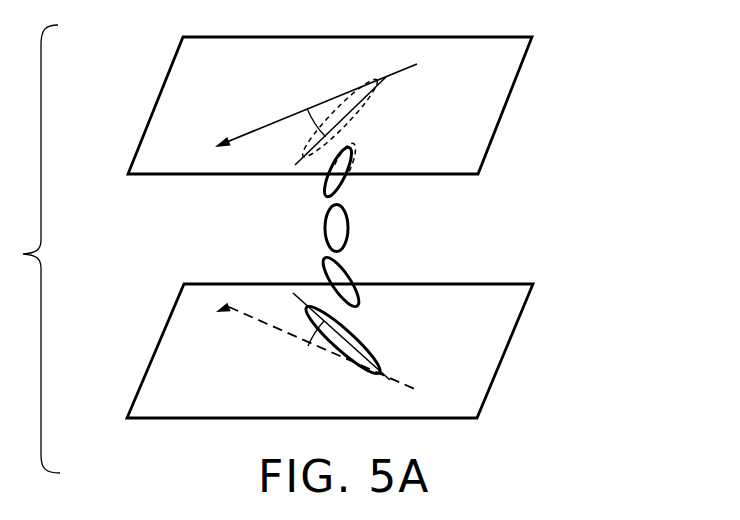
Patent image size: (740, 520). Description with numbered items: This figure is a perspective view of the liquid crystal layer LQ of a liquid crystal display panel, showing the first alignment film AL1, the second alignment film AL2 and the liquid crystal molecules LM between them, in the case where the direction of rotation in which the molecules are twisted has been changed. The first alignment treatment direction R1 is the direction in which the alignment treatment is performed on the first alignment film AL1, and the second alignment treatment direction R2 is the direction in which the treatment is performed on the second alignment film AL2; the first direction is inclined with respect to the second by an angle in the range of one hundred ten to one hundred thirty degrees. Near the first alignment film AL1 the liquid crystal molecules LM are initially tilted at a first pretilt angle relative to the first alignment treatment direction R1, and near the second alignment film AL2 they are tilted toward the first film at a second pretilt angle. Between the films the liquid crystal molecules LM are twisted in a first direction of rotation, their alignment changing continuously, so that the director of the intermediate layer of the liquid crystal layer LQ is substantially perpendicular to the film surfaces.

The liquid crystal layer LQ is at (164, 237).
The first alignment film AL1 is at (503, 358).
The second alignment film AL2 is at (502, 115).
The liquid crystal molecules LM is at (355, 162).
The first alignment treatment direction R1 is at (262, 332).
The second alignment treatment direction R2 is at (257, 128).